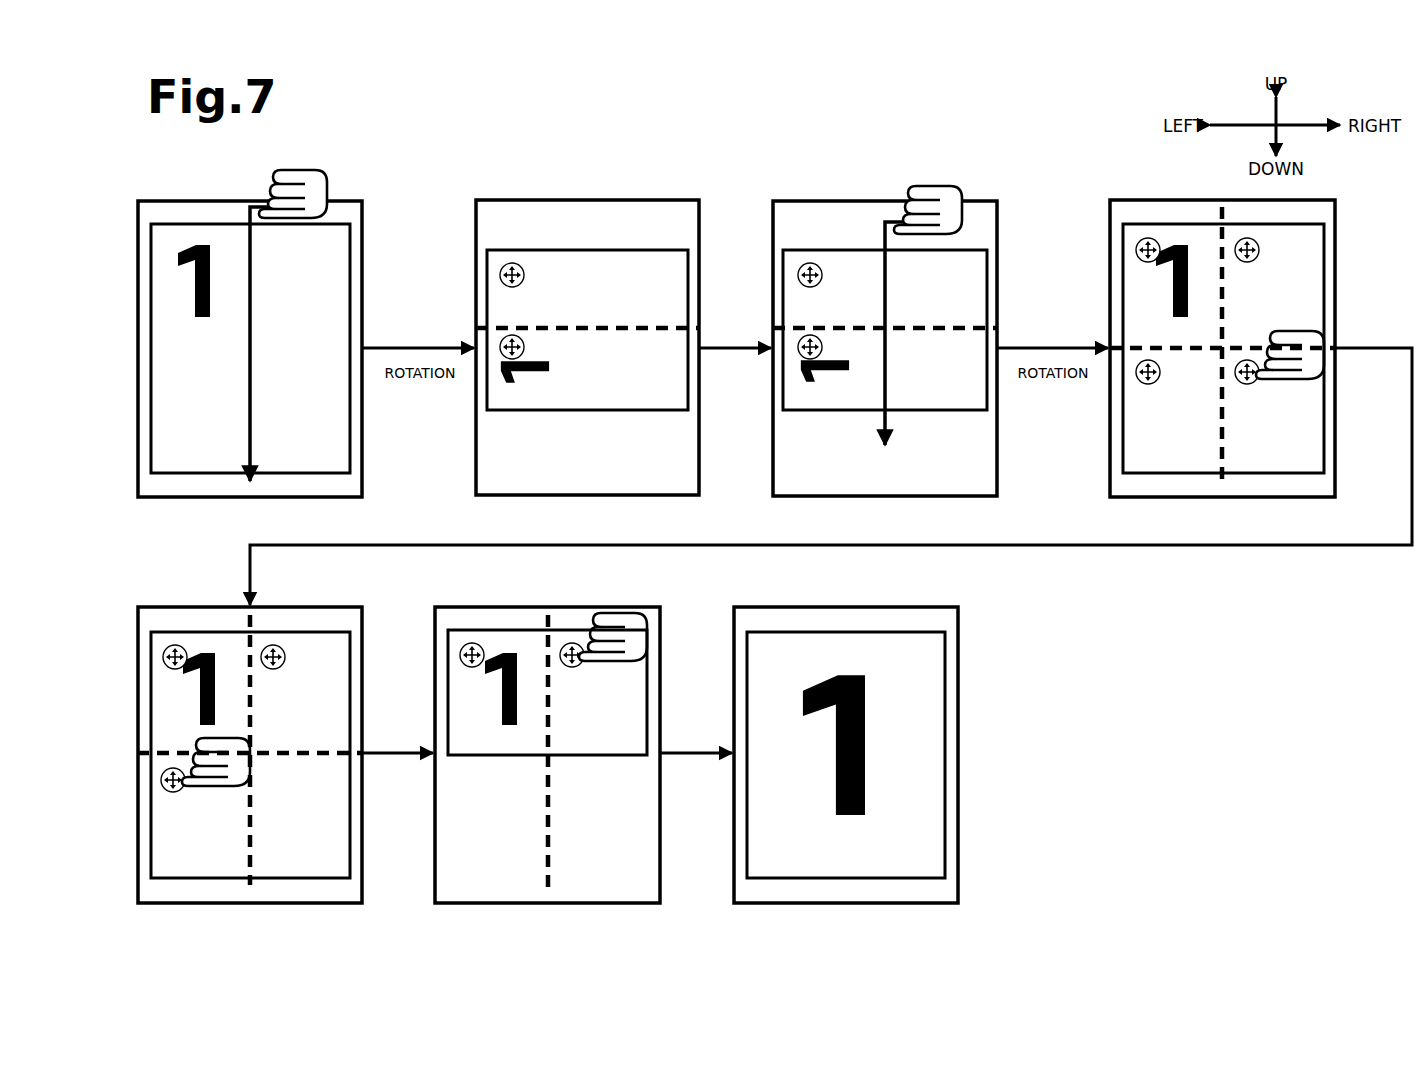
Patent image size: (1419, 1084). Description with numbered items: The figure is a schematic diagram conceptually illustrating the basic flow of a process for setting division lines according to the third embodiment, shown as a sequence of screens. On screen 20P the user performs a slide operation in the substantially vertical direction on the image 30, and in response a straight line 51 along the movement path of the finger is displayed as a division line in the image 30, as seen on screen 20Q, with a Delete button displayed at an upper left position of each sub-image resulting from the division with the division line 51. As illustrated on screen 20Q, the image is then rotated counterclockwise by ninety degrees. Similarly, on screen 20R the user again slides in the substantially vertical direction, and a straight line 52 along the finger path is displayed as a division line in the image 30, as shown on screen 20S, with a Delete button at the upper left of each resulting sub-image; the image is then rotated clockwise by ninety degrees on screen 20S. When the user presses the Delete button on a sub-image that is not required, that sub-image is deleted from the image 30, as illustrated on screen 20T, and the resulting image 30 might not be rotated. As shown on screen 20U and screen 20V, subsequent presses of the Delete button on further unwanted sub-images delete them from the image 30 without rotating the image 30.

The screen 20P is at (160, 201).
The screen 20Q is at (569, 200).
The screen 20R is at (832, 201).
The screen 20S is at (1122, 200).
The screen 20T is at (163, 607).
The screen 20U is at (458, 607).
The screen 20V is at (760, 607).
The image 30 is at (215, 224).
The straight line 51 is at (672, 326).
The straight line 52 is at (1226, 455).